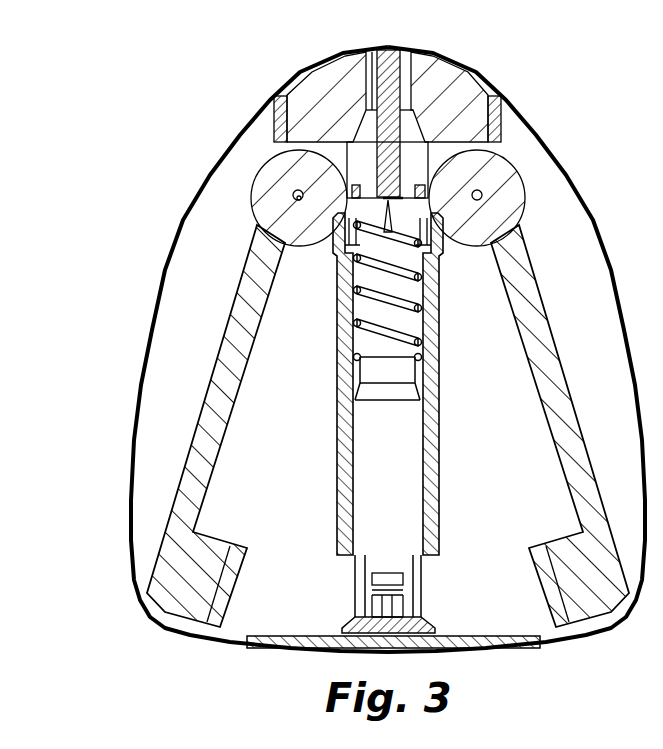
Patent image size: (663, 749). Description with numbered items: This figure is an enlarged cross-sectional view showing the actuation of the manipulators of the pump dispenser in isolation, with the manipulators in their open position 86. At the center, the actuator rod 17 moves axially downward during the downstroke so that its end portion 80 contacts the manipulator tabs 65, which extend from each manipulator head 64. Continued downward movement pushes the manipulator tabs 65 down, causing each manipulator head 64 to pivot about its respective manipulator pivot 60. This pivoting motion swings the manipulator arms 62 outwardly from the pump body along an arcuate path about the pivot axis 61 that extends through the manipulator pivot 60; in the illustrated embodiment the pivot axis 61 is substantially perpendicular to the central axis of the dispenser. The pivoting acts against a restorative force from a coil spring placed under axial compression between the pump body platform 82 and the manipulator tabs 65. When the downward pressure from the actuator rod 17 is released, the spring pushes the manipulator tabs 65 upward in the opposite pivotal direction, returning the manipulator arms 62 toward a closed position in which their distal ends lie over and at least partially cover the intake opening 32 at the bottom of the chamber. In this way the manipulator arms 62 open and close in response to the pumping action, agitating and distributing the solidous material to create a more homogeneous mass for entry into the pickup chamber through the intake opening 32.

The open position 86 is at (126, 539).
The actuator rod 17 is at (427, 145).
The end portion 80 is at (370, 195).
The manipulator tabs 65 is at (403, 188).
The manipulator head 64 is at (272, 168).
The manipulator pivot 60 is at (477, 190).
The pivot axis 61 is at (301, 212).
The manipulator arm 62 is at (187, 462).
The pump body platform 82 is at (432, 355).
The intake opening 32 is at (353, 558).